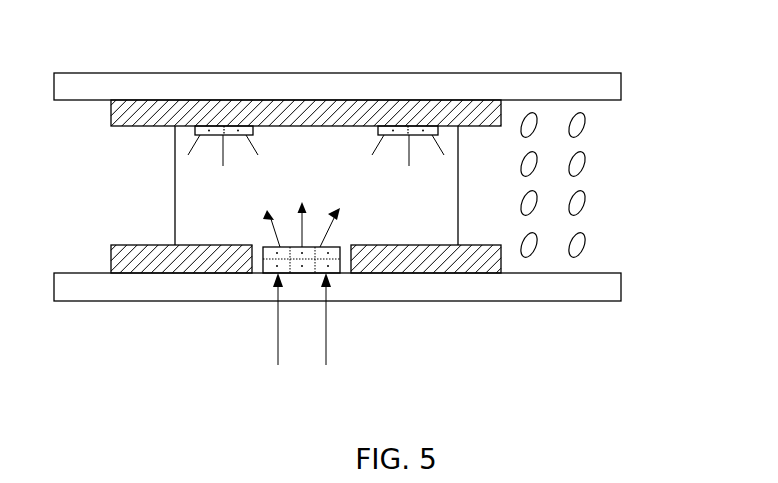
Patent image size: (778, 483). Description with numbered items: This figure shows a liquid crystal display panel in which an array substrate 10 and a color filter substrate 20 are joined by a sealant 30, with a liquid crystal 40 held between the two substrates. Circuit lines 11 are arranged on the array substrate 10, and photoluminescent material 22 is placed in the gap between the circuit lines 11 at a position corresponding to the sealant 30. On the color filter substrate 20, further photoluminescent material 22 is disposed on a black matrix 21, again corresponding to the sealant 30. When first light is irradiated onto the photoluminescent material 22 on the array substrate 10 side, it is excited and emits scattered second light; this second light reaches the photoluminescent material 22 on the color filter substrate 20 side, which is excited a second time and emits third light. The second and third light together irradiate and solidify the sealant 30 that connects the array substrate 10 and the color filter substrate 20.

The array substrate 10 is at (544, 288).
The circuit lines 11 is at (157, 262).
The color filter substrate 20 is at (203, 87).
The black matrix 21 is at (395, 110).
The photoluminescent material 22 is at (243, 128).
The sealant 30 is at (192, 213).
The liquid crystal 40 is at (597, 178).